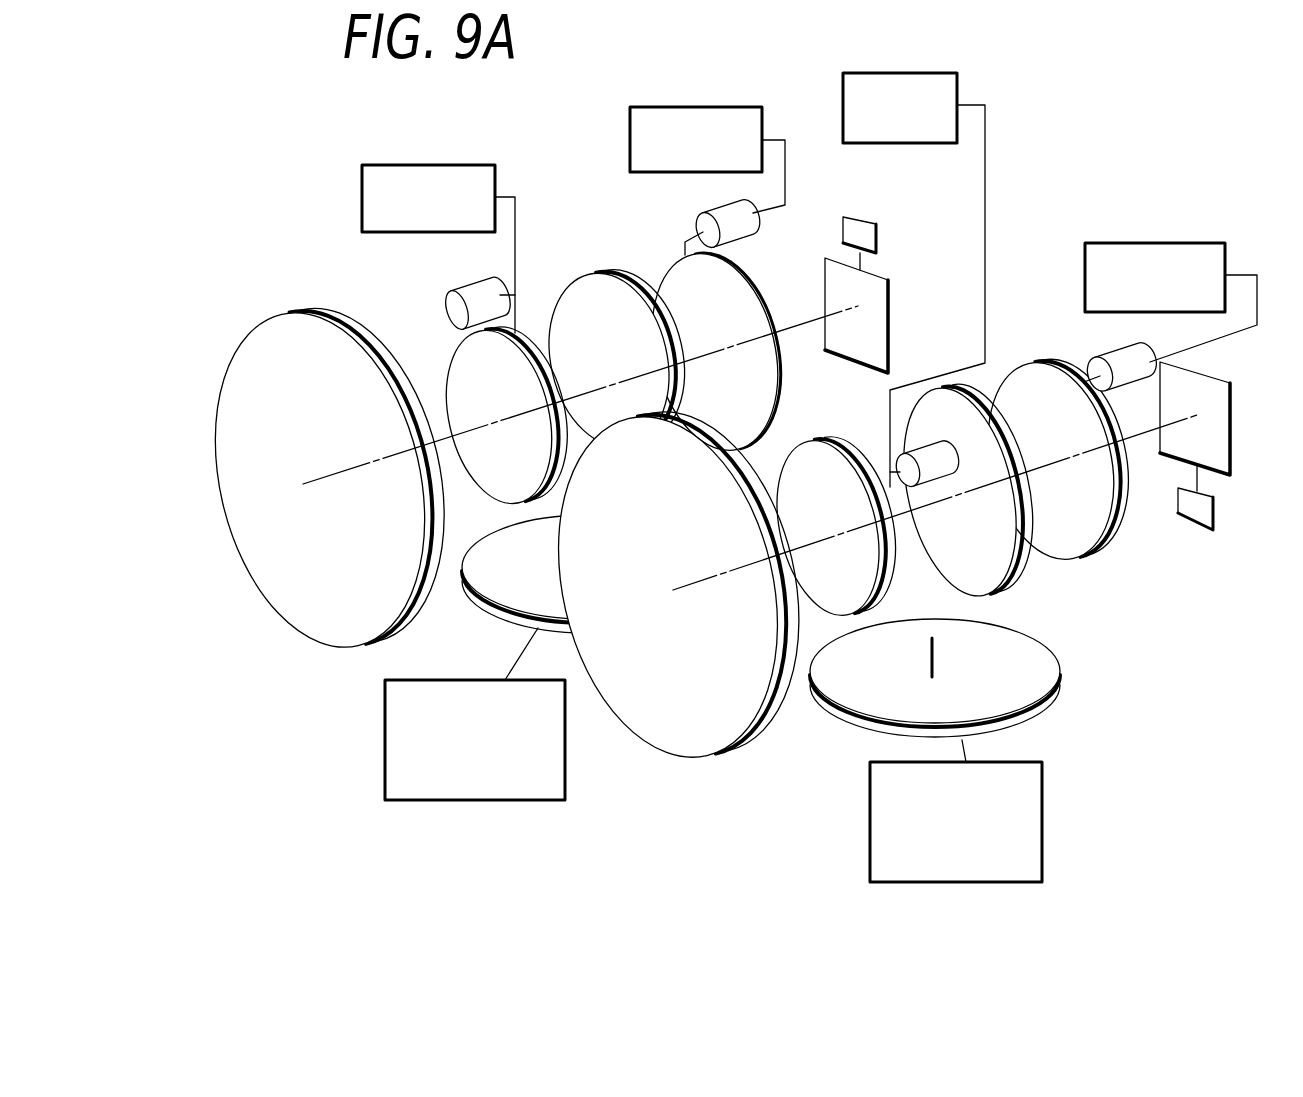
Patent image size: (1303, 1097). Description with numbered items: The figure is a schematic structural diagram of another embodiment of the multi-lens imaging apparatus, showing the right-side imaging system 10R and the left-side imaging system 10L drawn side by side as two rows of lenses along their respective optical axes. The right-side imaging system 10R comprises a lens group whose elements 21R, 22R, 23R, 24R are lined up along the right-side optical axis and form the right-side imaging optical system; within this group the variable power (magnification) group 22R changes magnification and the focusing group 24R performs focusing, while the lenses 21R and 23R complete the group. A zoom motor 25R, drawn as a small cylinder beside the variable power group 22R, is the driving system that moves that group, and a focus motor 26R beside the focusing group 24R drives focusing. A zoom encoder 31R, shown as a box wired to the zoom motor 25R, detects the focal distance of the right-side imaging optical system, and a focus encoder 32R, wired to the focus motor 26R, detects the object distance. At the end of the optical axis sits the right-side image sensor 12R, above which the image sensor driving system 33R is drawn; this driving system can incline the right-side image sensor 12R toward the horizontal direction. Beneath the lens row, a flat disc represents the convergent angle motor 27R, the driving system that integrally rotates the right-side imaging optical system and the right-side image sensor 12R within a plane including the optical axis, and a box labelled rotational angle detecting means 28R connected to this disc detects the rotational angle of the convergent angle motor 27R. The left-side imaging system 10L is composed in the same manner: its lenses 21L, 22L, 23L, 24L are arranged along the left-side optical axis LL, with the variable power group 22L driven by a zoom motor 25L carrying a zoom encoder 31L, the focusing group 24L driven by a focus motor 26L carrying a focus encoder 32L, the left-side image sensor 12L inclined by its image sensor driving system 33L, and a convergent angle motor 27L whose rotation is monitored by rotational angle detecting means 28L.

The right-side imaging system 10R is at (565, 170).
The left-side imaging system 10L is at (741, 802).
The right-side image sensor 12R is at (893, 298).
The left-side image sensor 12L is at (1232, 462).
The lens group element 21R is at (236, 356).
The lens group element 21L is at (682, 735).
The variable power group 22R is at (458, 375).
The variable power group 22L is at (823, 590).
The lens group element 23R is at (573, 298).
The lens group element 23L is at (968, 490).
The focusing group 24R is at (673, 280).
The focusing group 24L is at (1096, 541).
The zoom motor 25R is at (475, 293).
The zoom motor 25L is at (930, 456).
The focus motor 26R is at (722, 210).
The focus motor 26L is at (1110, 357).
The convergent angle motor 27R is at (487, 580).
The convergent angle motor 27L is at (1047, 665).
The rotational angle detecting means 28R is at (546, 800).
The rotational angle detecting means 28L is at (1043, 847).
The zoom encoder 31R is at (383, 164).
The zoom encoder 31L is at (872, 72).
The focus encoder 32R is at (657, 106).
The focus encoder 32L is at (1117, 243).
The image sensor driving system 33R is at (853, 217).
The image sensor driving system 33L is at (1214, 520).
The optical axis LL is at (673, 590).